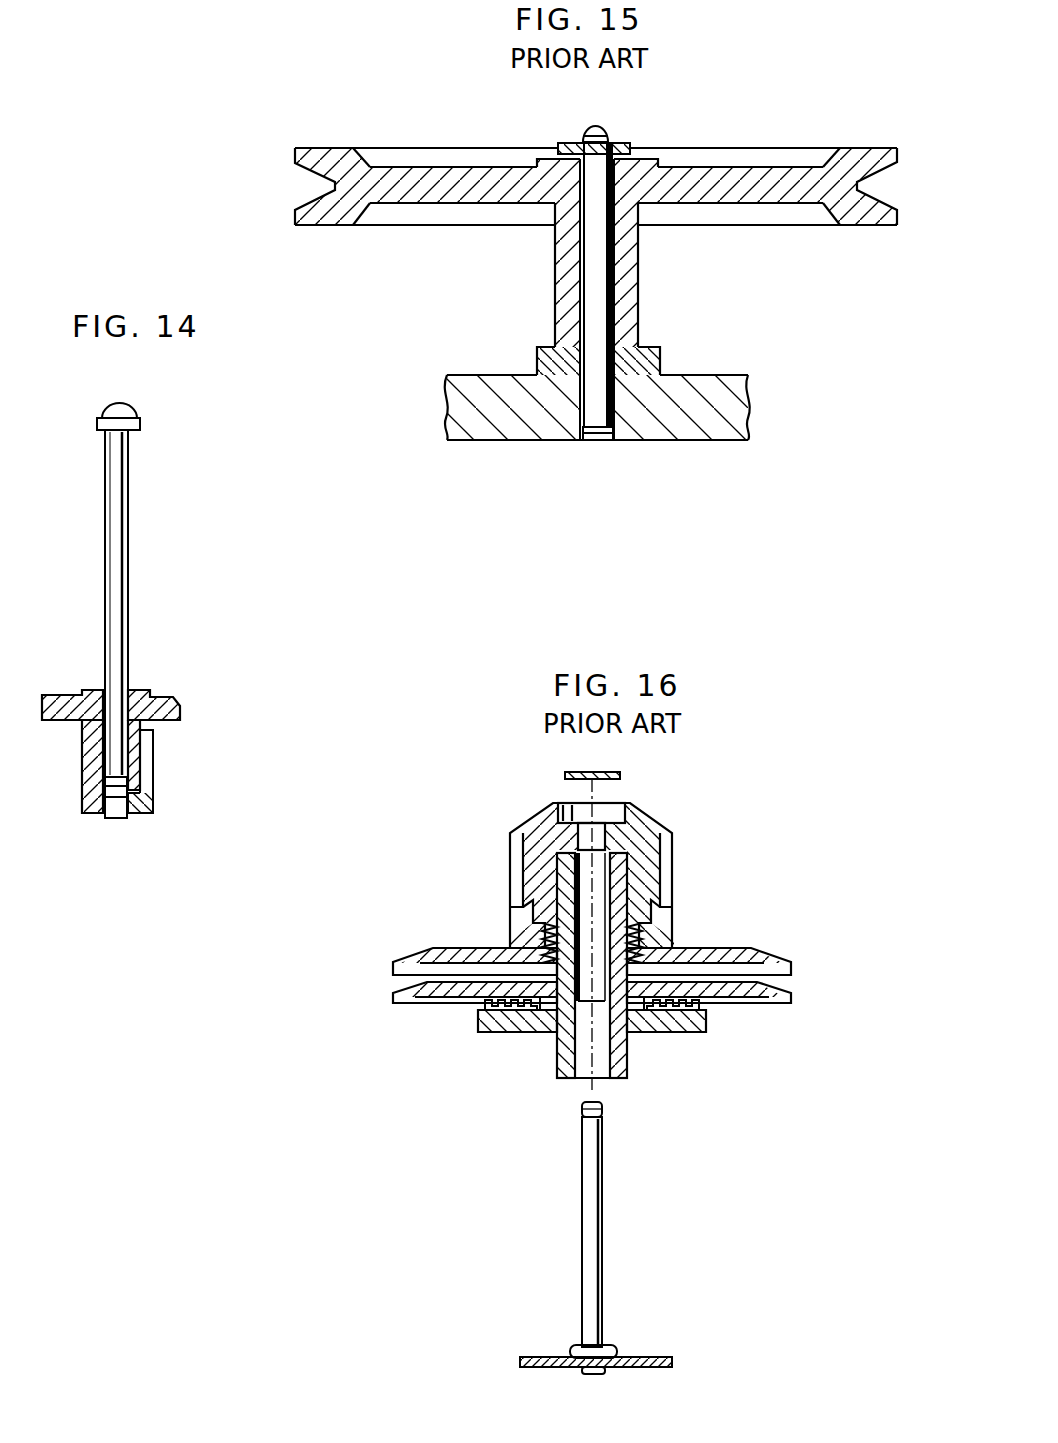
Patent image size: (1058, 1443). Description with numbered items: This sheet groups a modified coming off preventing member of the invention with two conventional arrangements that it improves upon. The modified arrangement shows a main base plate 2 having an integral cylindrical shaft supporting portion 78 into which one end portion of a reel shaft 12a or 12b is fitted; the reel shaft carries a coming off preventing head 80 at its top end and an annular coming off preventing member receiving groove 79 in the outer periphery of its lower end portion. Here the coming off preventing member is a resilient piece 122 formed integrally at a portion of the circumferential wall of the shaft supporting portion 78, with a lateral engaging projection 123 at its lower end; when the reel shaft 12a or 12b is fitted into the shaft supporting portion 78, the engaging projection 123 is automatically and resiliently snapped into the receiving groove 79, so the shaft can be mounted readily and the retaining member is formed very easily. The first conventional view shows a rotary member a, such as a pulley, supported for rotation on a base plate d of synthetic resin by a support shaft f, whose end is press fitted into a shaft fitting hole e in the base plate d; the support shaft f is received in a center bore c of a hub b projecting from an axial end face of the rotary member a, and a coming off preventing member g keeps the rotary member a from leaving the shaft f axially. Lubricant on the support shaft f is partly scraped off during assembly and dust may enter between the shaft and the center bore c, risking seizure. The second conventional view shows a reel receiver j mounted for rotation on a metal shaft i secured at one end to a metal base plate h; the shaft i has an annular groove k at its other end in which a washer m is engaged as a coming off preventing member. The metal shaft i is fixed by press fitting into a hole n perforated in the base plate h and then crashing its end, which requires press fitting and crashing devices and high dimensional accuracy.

In FIG. 15, the rotary member a is at (860, 147).
In FIG. 15, the hub b is at (633, 318).
In FIG. 15, the center bore c is at (584, 262).
In FIG. 15, the base plate d is at (735, 407).
In FIG. 15, the shaft fitting hole e is at (583, 428).
In FIG. 15, the support shaft f is at (607, 277).
In FIG. 15, the coming off preventing member g is at (622, 142).
In FIG. 14, the coming off preventing head 80 is at (140, 413).
In FIG. 14, the reel shaft 12a is at (202, 603).
In FIG. 14, the reel shaft 12b is at (128, 549).
In FIG. 14, the main base plate 2 is at (152, 700).
In FIG. 14, the cylindrical shaft supporting portion 78 is at (82, 740).
In FIG. 14, the resilient piece 122 is at (133, 753).
In FIG. 14, the coming off preventing member receiving groove 79 is at (103, 778).
In FIG. 14, the engaging projection 123 is at (117, 820).
In FIG. 16, the washer m is at (623, 764).
In FIG. 16, the reel receiver j is at (672, 832).
In FIG. 16, the annular groove k is at (602, 1112).
In FIG. 16, the metal shaft i is at (602, 1177).
In FIG. 16, the hole n is at (595, 1342).
In FIG. 16, the base plate h is at (542, 1357).